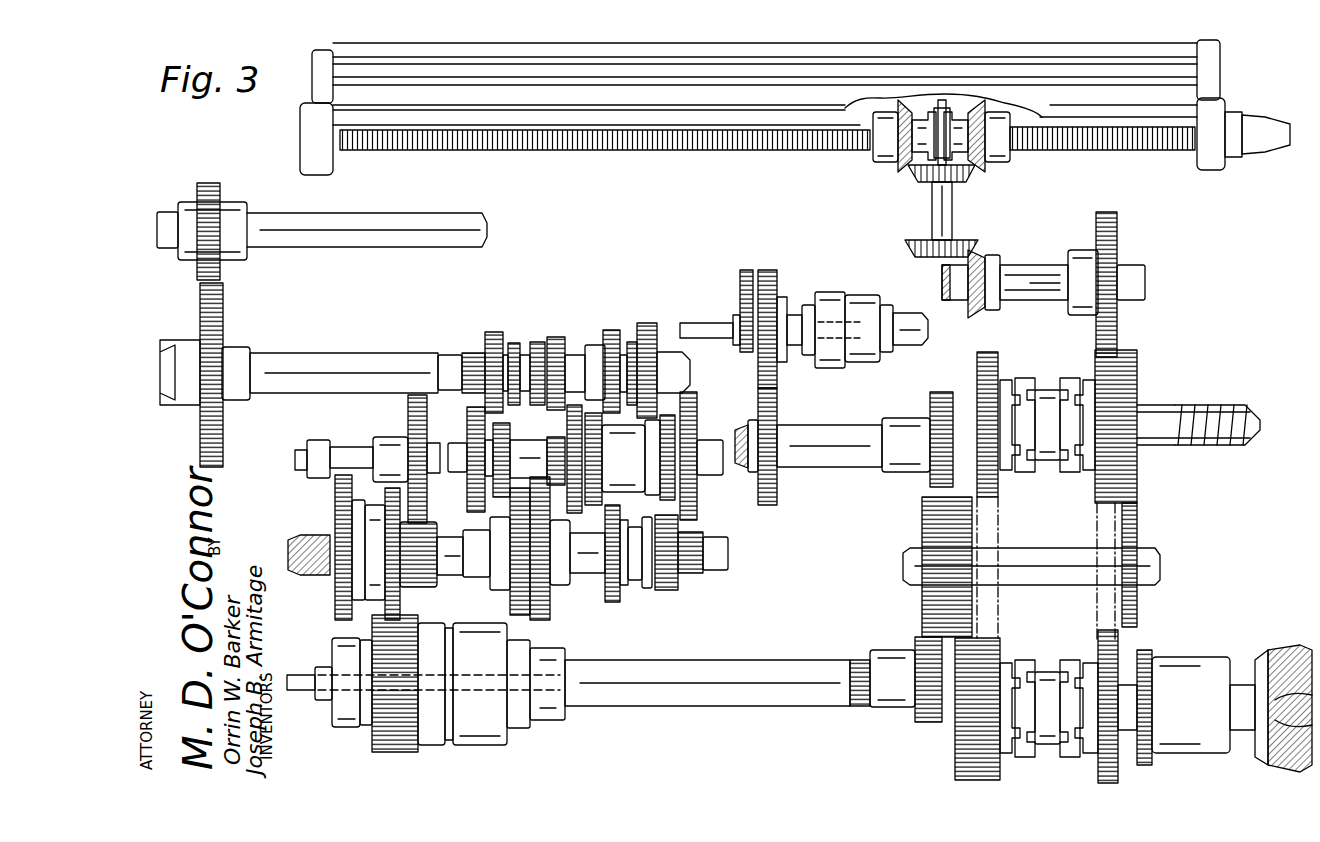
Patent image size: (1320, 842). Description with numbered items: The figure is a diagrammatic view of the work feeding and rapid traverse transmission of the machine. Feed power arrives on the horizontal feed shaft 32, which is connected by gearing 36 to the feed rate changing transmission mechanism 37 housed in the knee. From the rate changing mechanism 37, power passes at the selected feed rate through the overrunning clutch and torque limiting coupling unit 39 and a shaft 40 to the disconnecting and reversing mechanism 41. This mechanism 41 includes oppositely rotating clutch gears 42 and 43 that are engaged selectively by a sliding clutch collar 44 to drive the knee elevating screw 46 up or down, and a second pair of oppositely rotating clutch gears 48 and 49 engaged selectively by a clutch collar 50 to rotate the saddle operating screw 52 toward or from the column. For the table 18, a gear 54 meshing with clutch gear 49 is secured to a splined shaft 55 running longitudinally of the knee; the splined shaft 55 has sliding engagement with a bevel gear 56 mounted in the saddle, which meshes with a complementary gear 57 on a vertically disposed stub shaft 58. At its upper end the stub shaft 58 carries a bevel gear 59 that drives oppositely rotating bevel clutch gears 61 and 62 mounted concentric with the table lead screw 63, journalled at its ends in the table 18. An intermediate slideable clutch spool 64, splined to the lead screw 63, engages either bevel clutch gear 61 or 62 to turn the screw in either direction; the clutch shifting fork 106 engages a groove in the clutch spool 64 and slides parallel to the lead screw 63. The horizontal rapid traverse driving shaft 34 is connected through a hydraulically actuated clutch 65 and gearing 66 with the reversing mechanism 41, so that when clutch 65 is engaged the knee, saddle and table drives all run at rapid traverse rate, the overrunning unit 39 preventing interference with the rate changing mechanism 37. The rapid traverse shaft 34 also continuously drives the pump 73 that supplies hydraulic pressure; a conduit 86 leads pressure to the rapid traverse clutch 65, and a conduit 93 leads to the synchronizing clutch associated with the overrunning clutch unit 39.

The table 18 is at (578, 47).
The horizontal feed shaft 32 is at (415, 216).
The horizontal rapid traverse driving shaft 34 is at (910, 347).
The gearing 36 is at (225, 302).
The feed rate changing transmission mechanism 37 is at (454, 351).
The overrunning clutch and torque limiting coupling unit 39 is at (470, 746).
The shaft 40 is at (660, 660).
The disconnecting and reversing mechanism 41 is at (907, 549).
The clutch gear 42 is at (955, 758).
The clutch gear 43 is at (1100, 772).
The sliding clutch collar 44 is at (1050, 665).
The knee elevating screw 46 is at (1288, 652).
The clutch gear 48 is at (998, 362).
The clutch gear 49 is at (1140, 368).
The clutch collar 50 is at (1046, 470).
The saddle operating screw 52 is at (1197, 448).
The gear 54 is at (1112, 212).
The splined shaft 55 is at (1030, 268).
The bevel gear 56 is at (980, 256).
The complementary gear 57 is at (922, 242).
The vertically disposed stub shaft 58 is at (935, 195).
The bevel gear 59 is at (962, 182).
The bevel clutch gear 61 is at (890, 164).
The bevel clutch gear 62 is at (990, 165).
The lead screw 63 is at (1088, 148).
The slideable clutch spool 64 is at (960, 110).
The hydraulically actuated clutch 65 is at (837, 376).
The gearing 66 is at (777, 418).
The pump 73 is at (731, 304).
The conduit 86 is at (690, 325).
The conduit 93 is at (290, 673).
The clutch shifting fork 106 is at (940, 100).